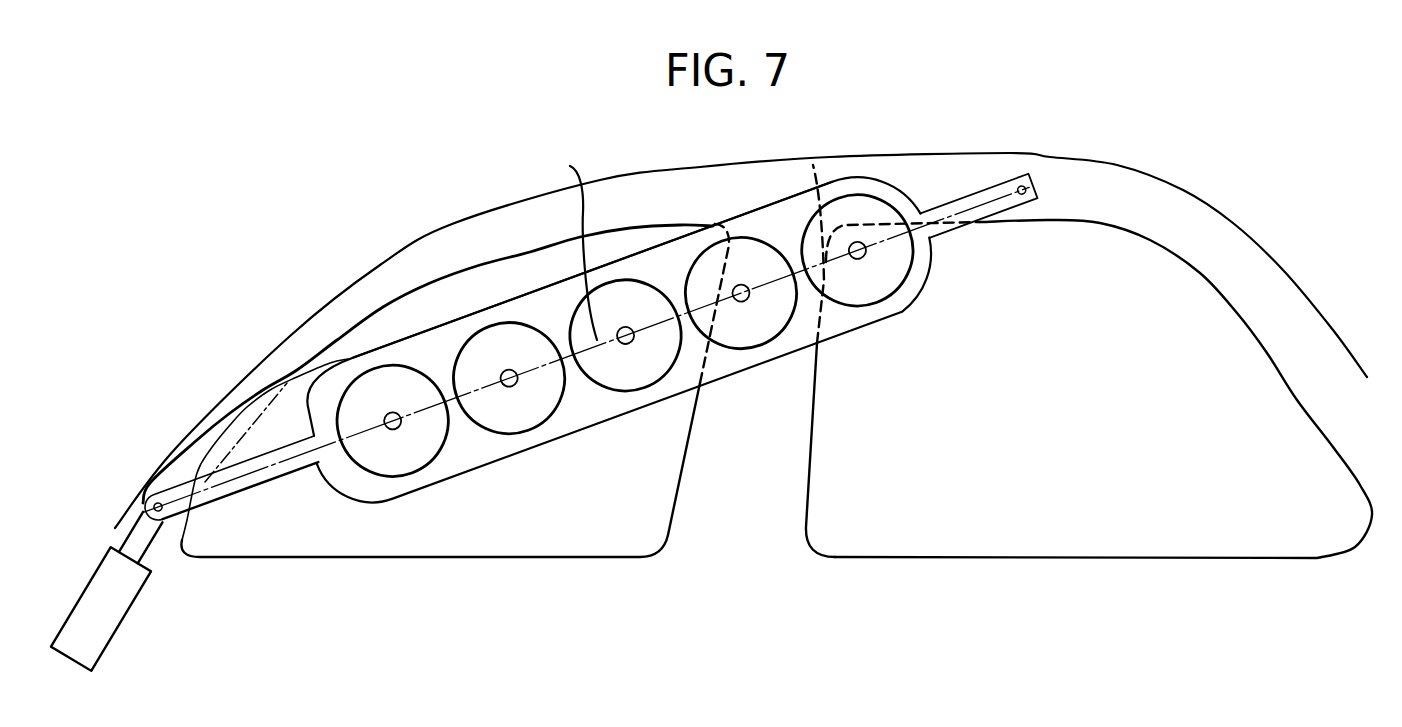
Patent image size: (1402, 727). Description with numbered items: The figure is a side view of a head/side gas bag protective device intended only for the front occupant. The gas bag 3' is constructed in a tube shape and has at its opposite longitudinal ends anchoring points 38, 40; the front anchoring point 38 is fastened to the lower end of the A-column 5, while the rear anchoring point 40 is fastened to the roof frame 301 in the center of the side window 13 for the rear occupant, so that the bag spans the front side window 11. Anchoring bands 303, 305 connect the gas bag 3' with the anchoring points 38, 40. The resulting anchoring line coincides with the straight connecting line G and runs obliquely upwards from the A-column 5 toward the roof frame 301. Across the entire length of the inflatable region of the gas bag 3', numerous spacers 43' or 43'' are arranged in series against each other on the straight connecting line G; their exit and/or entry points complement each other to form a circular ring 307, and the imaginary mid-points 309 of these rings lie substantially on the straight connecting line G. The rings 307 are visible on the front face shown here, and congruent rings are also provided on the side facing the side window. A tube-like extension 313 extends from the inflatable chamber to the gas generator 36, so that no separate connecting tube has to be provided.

The A-column 5 is at (292, 346).
The front window opening 11 is at (566, 532).
The side window 13 is at (1090, 528).
The gas generator 36 is at (100, 626).
The anchoring point 38 is at (153, 498).
The anchoring point 40 is at (1028, 177).
The spacer 43' is at (275, 338).
The spacer 43'' is at (428, 349).
The straight connecting line G is at (575, 244).
The gas bag 3' is at (618, 338).
The roof frame 301 is at (811, 178).
The anchoring band 303 is at (248, 480).
The anchoring band 305 is at (988, 210).
The circular ring 307 is at (392, 477).
The imaginary mid-point 309 is at (402, 420).
The tube-like extension 313 is at (231, 426).